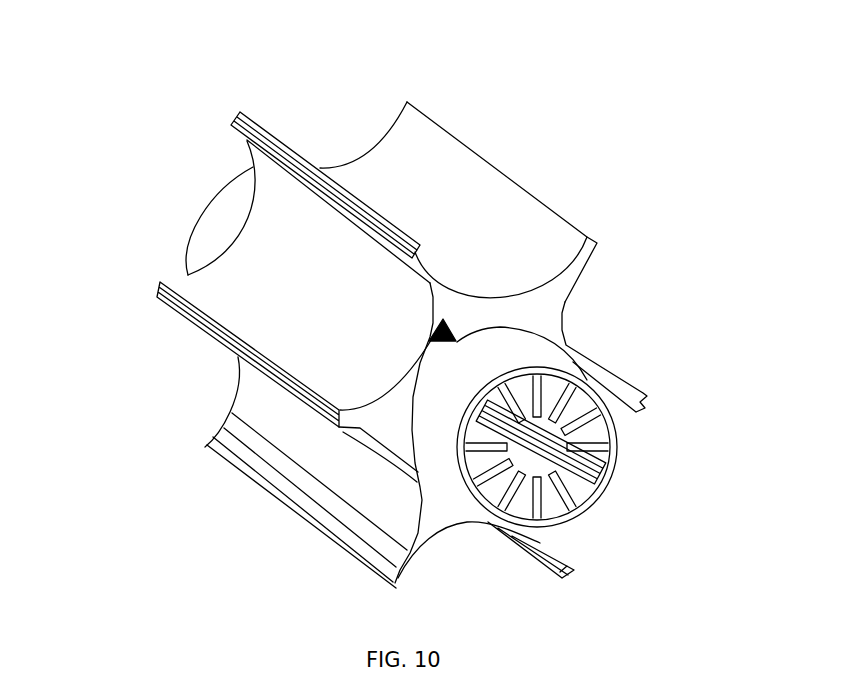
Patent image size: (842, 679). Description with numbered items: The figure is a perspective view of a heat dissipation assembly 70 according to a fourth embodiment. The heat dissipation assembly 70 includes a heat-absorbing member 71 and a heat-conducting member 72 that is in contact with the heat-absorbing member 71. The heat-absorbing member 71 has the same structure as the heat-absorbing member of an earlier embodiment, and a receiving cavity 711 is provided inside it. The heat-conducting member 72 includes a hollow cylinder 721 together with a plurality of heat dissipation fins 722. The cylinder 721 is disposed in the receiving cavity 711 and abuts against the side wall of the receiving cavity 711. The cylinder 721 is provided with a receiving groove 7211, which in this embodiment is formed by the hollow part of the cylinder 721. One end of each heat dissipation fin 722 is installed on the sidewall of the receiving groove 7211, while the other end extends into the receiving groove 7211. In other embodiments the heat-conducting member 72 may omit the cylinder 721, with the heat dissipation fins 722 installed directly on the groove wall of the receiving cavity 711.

The heat dissipation assembly 70 is at (482, 44).
The heat-absorbing member 71 is at (497, 210).
The receiving cavity 711 is at (433, 330).
The heat-conducting member 72 is at (497, 355).
The hollow cylinder 721 is at (443, 445).
The receiving groove 7211 is at (555, 518).
The heat dissipation fin 722 is at (613, 453).